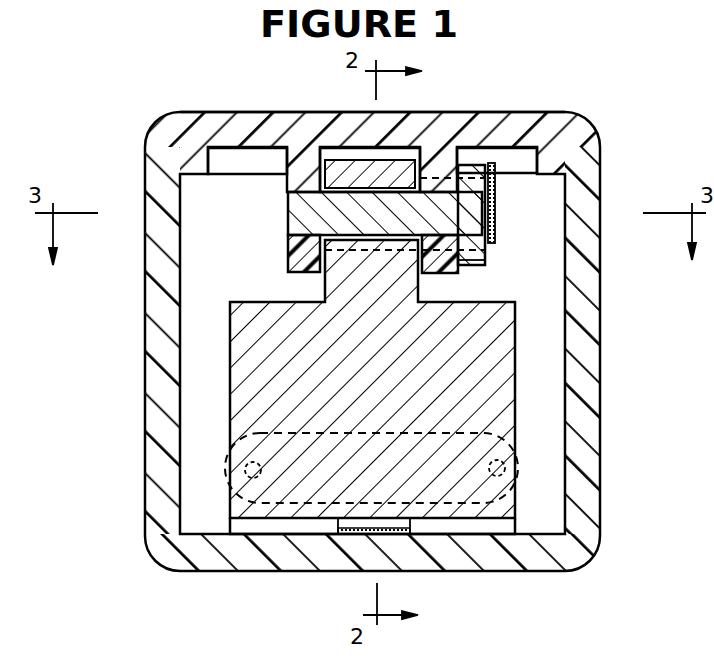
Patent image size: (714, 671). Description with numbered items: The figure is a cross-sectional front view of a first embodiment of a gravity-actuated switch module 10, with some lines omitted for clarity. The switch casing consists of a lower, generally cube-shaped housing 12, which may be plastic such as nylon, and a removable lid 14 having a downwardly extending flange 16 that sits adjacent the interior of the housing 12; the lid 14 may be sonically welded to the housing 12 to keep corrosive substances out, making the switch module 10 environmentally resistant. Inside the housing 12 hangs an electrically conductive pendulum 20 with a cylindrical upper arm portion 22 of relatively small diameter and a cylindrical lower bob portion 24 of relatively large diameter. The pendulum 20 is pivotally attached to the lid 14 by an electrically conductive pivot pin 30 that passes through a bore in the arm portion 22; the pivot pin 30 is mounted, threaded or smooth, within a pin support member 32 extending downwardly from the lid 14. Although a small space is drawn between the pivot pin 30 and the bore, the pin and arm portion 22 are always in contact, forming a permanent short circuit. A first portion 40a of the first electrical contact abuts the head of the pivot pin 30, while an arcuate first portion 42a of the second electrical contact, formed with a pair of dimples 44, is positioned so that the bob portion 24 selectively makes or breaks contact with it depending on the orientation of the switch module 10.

The switch module 10 is at (606, 105).
The housing 12 is at (600, 390).
The lid 14 is at (227, 112).
The flange 16 is at (229, 175).
The pendulum 20 is at (492, 287).
The arm portion 22 is at (325, 291).
The bob portion 24 is at (515, 355).
The pivot pin 30 is at (287, 212).
The pin support member 32 is at (287, 258).
The first portion of electrical contact 40a is at (497, 235).
The arcuate portion 42a is at (518, 468).
The dimples 44 is at (228, 480).